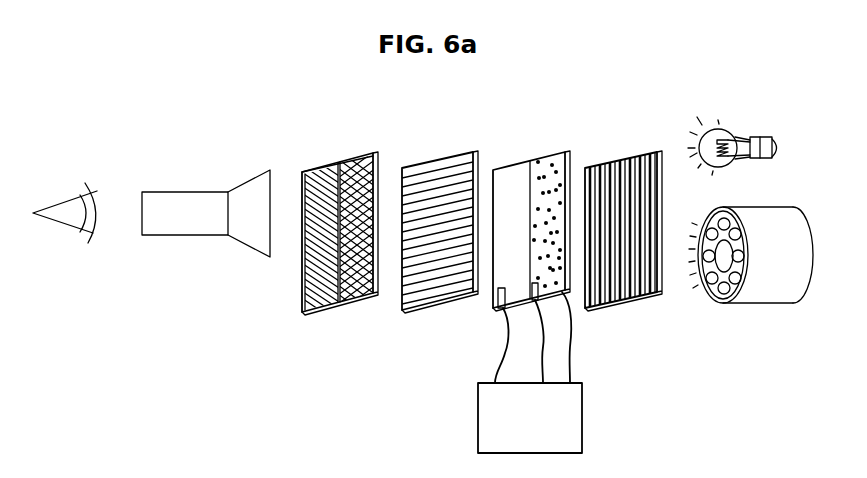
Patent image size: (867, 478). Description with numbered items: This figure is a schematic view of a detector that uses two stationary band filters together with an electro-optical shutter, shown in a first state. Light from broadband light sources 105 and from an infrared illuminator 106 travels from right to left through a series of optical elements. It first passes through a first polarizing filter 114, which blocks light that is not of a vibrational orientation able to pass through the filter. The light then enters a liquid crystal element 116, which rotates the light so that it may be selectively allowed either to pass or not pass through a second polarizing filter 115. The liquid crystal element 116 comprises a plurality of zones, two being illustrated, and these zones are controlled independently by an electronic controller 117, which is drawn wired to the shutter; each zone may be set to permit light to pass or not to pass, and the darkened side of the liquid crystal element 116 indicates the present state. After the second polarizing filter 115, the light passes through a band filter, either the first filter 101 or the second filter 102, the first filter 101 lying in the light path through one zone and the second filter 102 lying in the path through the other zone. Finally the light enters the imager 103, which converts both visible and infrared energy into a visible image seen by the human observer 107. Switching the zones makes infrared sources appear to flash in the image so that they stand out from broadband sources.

The first filter 101 is at (312, 172).
The second filter 102 is at (358, 157).
The imager 103 is at (173, 207).
The broadband light sources 105 is at (725, 130).
The infrared illuminator 106 is at (758, 277).
The human observer 107 is at (70, 243).
The first polarizing filter 114 is at (603, 295).
The second polarizing filter 115 is at (415, 283).
The liquid crystal element 116 is at (512, 163).
The electronic controller 117 is at (490, 417).